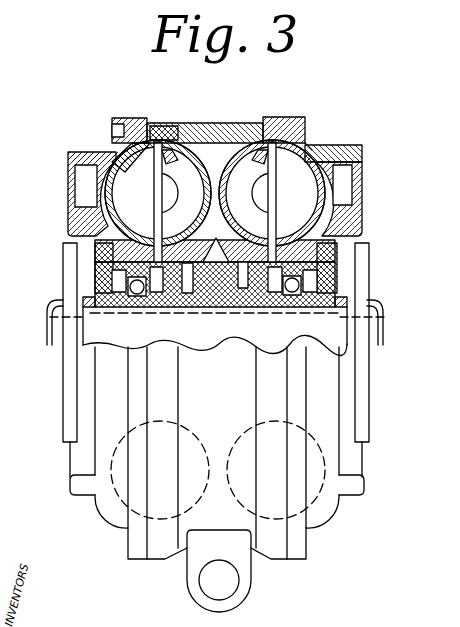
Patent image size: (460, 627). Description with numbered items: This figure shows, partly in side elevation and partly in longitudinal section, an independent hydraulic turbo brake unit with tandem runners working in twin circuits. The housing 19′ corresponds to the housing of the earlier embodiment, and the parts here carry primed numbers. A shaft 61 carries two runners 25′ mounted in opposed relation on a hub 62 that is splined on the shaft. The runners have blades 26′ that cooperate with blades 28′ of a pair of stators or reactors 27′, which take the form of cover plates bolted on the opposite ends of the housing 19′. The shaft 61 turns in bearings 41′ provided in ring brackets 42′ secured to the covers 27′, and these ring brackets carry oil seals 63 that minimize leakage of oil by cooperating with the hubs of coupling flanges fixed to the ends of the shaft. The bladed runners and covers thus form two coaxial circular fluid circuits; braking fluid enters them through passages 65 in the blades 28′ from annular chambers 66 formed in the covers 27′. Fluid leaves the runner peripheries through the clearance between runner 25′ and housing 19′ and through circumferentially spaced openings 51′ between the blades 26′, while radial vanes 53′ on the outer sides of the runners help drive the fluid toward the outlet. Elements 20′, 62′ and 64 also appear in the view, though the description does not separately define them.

The housing 19′ is at (173, 122).
The housing body 20′ is at (77, 479).
The runner 25′ is at (240, 122).
The runner blade 26′ is at (215, 204).
The stator 27′ is at (112, 152).
The stator blade 28′ is at (215, 201).
The bearing 41′ is at (137, 296).
The ring bracket 42′ is at (95, 256).
The opening 51′ is at (163, 183).
The radial vane 53′ is at (215, 161).
The shaft 61 is at (78, 357).
The hub 62 is at (252, 343).
The mounting lug 62′ is at (230, 588).
The oil seal 63 is at (90, 300).
The bracket bar 64 is at (63, 430).
The passage 65 is at (100, 225).
The annular chamber 66 is at (80, 186).